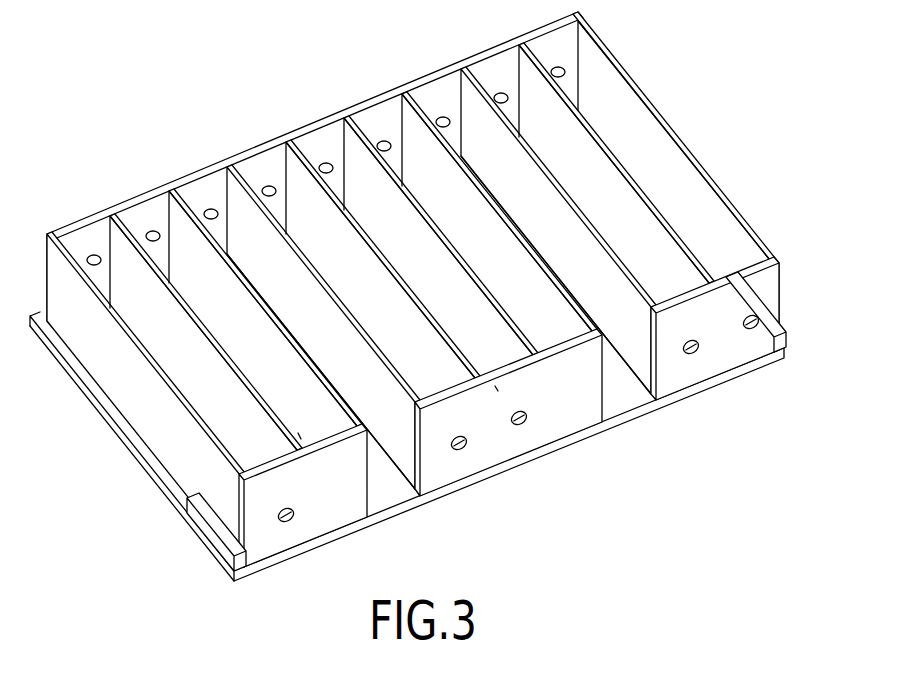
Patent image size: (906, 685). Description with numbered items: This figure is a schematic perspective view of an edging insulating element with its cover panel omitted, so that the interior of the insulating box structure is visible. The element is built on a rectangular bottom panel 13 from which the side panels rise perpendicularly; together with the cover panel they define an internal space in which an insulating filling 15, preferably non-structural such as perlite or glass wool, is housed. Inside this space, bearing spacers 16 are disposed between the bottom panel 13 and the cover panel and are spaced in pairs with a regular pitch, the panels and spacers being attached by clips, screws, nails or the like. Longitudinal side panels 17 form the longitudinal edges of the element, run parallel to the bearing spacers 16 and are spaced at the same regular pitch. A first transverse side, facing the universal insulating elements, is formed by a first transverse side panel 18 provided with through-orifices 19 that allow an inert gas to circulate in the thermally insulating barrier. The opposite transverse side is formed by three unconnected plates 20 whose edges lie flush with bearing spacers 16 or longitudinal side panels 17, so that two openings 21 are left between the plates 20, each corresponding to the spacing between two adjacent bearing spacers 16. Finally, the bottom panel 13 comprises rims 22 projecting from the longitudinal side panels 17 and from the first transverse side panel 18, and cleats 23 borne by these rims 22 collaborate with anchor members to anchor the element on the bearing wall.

The bottom panel 13 is at (383, 480).
The insulating filling 15 is at (723, 228).
The bearing spacers 16 is at (487, 378).
The longitudinal side panels 17 is at (673, 127).
The first transverse side panel 18 is at (258, 138).
The through-orifices 19 is at (316, 157).
The plates 20 is at (338, 503).
The openings 21 is at (407, 480).
The rims 22 is at (125, 422).
The cleats 23 is at (208, 530).